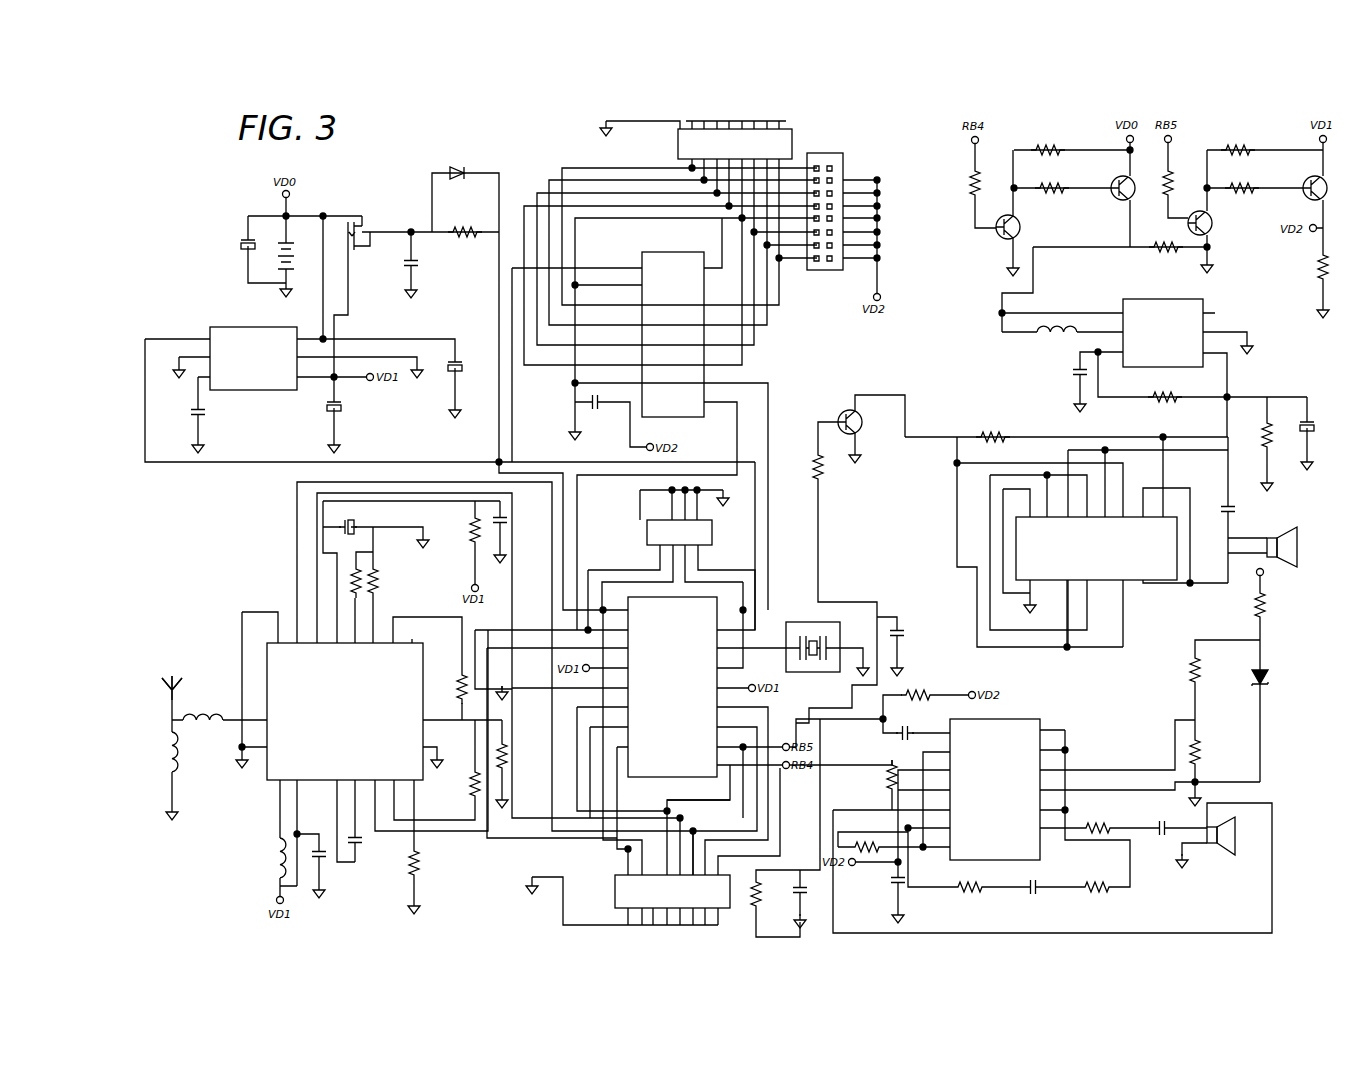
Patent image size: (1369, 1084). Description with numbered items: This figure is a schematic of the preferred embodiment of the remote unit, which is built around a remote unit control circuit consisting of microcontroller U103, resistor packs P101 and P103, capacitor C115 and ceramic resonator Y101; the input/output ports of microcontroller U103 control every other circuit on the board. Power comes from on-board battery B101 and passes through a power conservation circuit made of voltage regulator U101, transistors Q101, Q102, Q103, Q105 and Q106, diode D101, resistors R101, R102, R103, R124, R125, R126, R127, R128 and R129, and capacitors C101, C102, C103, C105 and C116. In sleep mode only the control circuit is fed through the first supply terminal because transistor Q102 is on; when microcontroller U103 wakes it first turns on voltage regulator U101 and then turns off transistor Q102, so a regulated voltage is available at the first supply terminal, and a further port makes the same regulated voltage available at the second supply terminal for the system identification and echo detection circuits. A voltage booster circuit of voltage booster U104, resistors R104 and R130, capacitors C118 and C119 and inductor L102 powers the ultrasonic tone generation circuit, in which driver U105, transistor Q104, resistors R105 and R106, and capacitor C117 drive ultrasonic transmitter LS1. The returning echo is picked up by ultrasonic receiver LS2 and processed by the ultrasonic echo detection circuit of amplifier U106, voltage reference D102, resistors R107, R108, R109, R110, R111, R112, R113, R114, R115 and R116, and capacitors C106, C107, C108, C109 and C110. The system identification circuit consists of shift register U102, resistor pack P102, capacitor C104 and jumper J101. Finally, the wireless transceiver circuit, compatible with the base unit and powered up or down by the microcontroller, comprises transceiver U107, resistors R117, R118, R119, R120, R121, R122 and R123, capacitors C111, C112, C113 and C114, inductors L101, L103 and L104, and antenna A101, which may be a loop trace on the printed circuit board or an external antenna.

The voltage regulator U101 is at (253, 340).
The capacitor C105 is at (225, 246).
The on-board battery B101 is at (304, 262).
The transistor Q102 is at (369, 214).
The capacitor C103 is at (420, 265).
The resistor R101 is at (465, 233).
The diode D101 is at (461, 169).
The capacitor C116 is at (431, 373).
The capacitor C102 is at (193, 419).
The capacitor C101 is at (332, 416).
The resistor pack P102 is at (678, 142).
The jumper J101 is at (852, 156).
The shift register U102 is at (692, 418).
The capacitor C104 is at (571, 412).
The resistor R102 is at (952, 177).
The transistor Q103 is at (1017, 240).
The resistor R128 is at (1061, 142).
The resistor R103 is at (1046, 189).
The transistor Q101 is at (1103, 193).
The resistor R126 is at (1148, 255).
The resistor R129 is at (1187, 175).
The transistor Q106 is at (1223, 236).
The resistor R127 is at (1253, 142).
The resistor R124 is at (1244, 188).
The transistor Q105 is at (1299, 189).
The resistor R125 is at (1297, 269).
The voltage booster U104 is at (1187, 302).
The inductor L102 is at (1055, 333).
The capacitor C118 is at (1058, 379).
The resistor R104 is at (1150, 407).
The resistor R130 is at (1254, 436).
The capacitor C119 is at (1324, 429).
The resistor R105 is at (976, 438).
The transistor Q104 is at (823, 407).
The resistor R106 is at (818, 480).
The ceramic resonator Y101 is at (813, 657).
The capacitor C115 is at (920, 624).
The resistor R114 is at (926, 674).
The driver U105 is at (1096, 548).
The capacitor C117 is at (1252, 509).
The ultrasonic transmitter LS1 is at (1298, 547).
The resistor R107 is at (1232, 607).
The voltage reference D102 is at (1235, 666).
The resistor R108 is at (1169, 671).
The resistor R109 is at (1216, 753).
The amplifier U106 is at (992, 720).
The capacitor C109 is at (879, 723).
The resistor R115 is at (863, 777).
The resistor R113 is at (862, 830).
The capacitor C108 is at (869, 888).
The resistor R112 is at (954, 896).
The capacitor C107 is at (1041, 901).
The resistor R111 is at (1103, 891).
The resistor R110 is at (1101, 827).
The capacitor C106 is at (1158, 816).
The ultrasonic receiver LS2 is at (1215, 845).
The resistor R116 is at (771, 879).
The capacitor C110 is at (802, 901).
The transceiver U107 is at (345, 711).
The antenna A101 is at (177, 662).
The inductor L103 is at (203, 729).
The inductor L104 is at (195, 760).
The capacitor C113 is at (373, 524).
The capacitor C114 is at (522, 524).
The resistor R123 is at (453, 540).
The resistor R122 is at (350, 576).
The resistor R121 is at (395, 580).
The resistor R120 is at (484, 686).
The resistor R119 is at (522, 755).
The resistor R118 is at (450, 791).
The resistor R117 is at (435, 871).
The inductor L101 is at (259, 858).
The capacitor C111 is at (339, 876).
The capacitor C112 is at (374, 854).
The microcontroller U103 is at (672, 697).
The resistor pack P101 is at (706, 539).
The resistor pack P103 is at (615, 887).